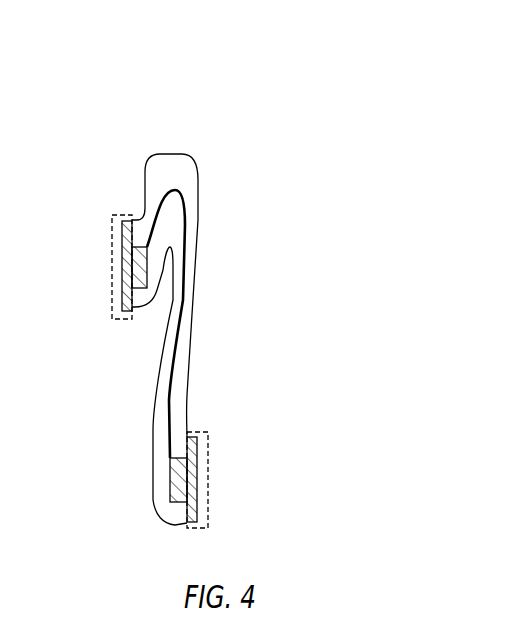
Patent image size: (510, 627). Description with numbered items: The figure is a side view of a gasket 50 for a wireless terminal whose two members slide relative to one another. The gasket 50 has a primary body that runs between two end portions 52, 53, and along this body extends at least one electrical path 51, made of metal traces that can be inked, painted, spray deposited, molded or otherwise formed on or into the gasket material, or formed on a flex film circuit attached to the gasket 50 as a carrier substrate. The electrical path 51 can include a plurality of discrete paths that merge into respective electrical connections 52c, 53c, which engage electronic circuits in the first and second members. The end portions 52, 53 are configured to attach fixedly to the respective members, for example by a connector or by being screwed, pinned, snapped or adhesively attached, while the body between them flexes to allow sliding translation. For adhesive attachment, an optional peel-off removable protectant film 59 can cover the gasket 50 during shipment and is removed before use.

The gasket 50 is at (173, 141).
The electrical path 51 is at (186, 218).
The end portion of the gasket 52 is at (127, 218).
The electrical connection 52c is at (122, 312).
The end portion of the gasket 53 is at (197, 485).
The electrical connection 53c is at (198, 458).
The peel-off removable protectant film 59 is at (113, 258).